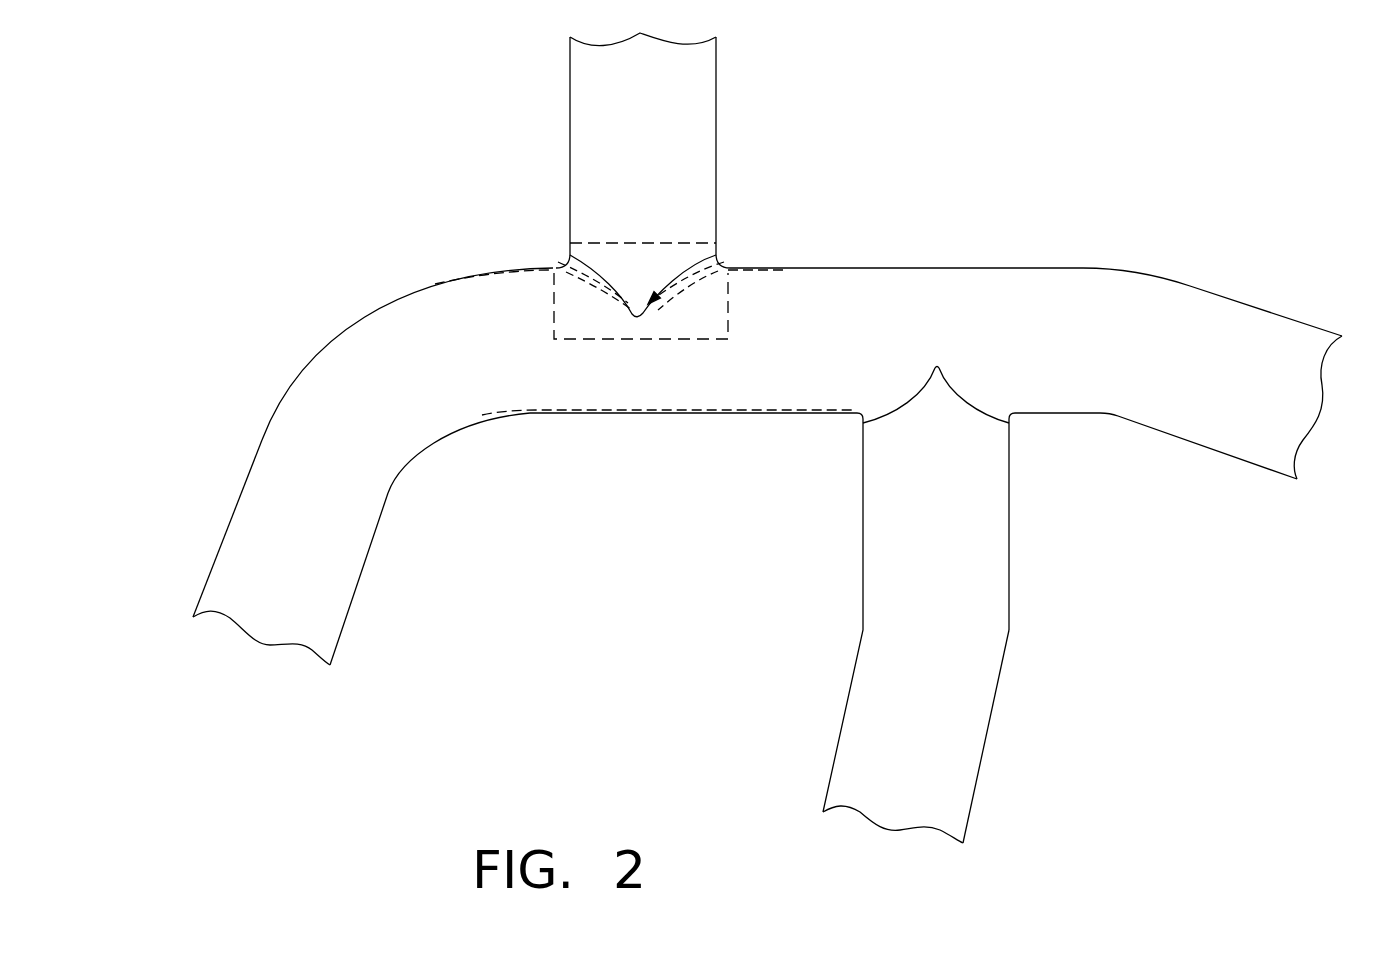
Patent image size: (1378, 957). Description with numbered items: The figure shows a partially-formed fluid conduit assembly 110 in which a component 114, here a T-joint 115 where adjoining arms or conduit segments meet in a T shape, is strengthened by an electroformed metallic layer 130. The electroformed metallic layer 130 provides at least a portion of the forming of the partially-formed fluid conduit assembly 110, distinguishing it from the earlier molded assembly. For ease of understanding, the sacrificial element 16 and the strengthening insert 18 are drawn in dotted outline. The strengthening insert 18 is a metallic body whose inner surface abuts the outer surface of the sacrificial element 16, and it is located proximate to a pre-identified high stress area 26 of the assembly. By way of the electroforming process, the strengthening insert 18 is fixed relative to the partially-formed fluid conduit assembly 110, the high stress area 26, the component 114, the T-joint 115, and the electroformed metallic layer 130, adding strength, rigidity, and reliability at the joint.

The partially-formed fluid conduit assembly 110 is at (1012, 96).
The strengthening insert 18 is at (580, 282).
The sacrificial element 16 is at (500, 265).
The electroformed metallic layer 130 is at (392, 385).
The high stress area 26 is at (958, 248).
The T-joint 115 is at (733, 228).
The component 114 is at (741, 258).